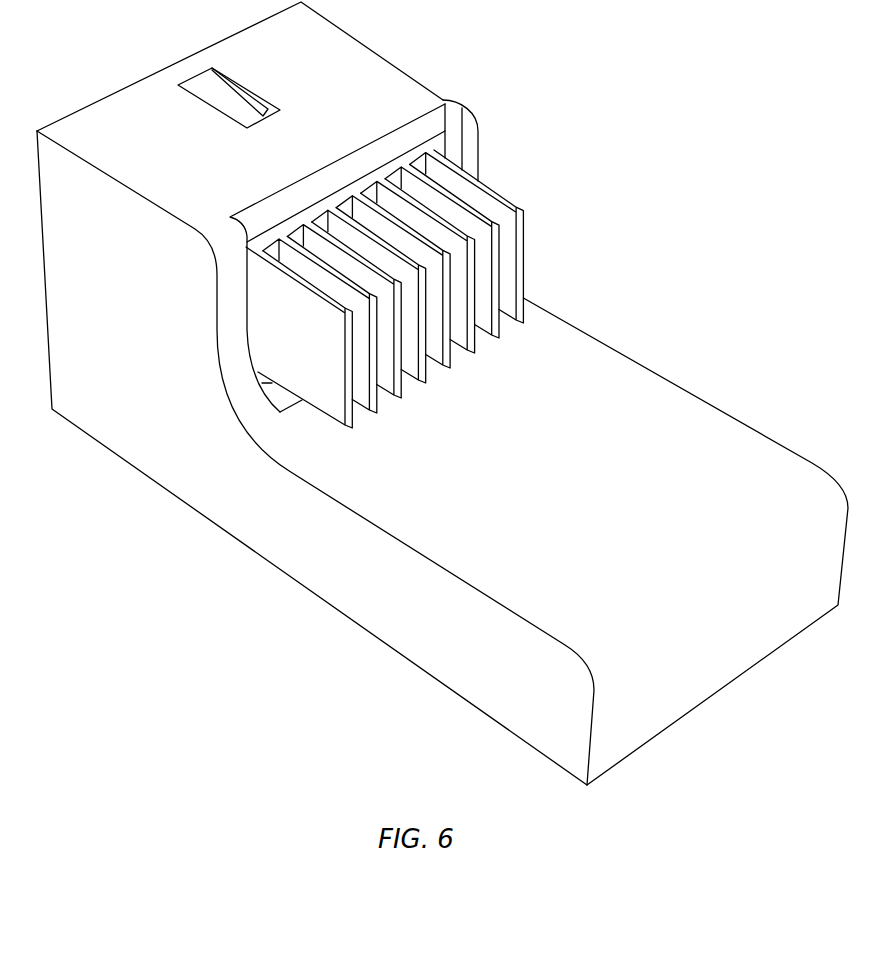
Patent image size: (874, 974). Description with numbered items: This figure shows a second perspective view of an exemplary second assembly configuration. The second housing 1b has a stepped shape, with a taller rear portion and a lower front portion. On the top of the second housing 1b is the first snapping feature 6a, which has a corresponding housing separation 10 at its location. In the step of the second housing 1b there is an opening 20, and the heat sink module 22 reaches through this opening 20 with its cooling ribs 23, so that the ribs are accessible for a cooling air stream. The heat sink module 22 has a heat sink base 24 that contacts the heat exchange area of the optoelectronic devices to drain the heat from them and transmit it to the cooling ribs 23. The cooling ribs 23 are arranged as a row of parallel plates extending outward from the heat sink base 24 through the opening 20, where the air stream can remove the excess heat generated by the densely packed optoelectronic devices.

The second housing 1b is at (683, 407).
The first snapping feature 6a is at (211, 92).
The housing separation 10 is at (265, 108).
The opening 20 is at (447, 118).
The heat sink module 22 is at (390, 170).
The cooling ribs 23 is at (399, 283).
The heat sink base 24 is at (433, 144).